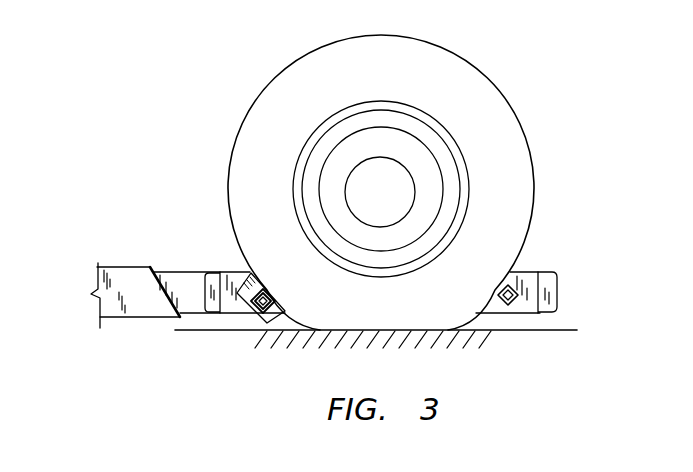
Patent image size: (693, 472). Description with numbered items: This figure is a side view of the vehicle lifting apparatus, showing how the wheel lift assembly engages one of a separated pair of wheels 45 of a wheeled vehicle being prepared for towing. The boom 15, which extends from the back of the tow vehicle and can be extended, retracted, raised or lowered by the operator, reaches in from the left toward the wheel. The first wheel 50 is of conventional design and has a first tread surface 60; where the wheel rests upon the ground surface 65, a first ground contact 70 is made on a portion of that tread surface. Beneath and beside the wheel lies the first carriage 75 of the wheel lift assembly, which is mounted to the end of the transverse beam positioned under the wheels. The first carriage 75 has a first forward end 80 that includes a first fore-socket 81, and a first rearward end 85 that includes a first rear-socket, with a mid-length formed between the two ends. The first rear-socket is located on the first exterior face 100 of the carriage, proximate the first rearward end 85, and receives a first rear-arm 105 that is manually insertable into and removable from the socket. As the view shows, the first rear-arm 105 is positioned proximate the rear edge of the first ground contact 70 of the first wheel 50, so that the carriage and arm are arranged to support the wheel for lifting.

The boom 15 is at (168, 267).
The separated pair of wheels 45 is at (352, 182).
The first wheel 50 is at (502, 118).
The first tread surface 60 is at (230, 163).
The ground surface 65 is at (560, 330).
The first ground contact 70 is at (423, 333).
The first carriage 75 is at (495, 307).
The first forward end 80 is at (548, 280).
The first fore-socket 81 is at (515, 279).
The first rearward end 85 is at (212, 272).
The first exterior face 100 is at (232, 278).
The first rear-arm 105 is at (247, 297).